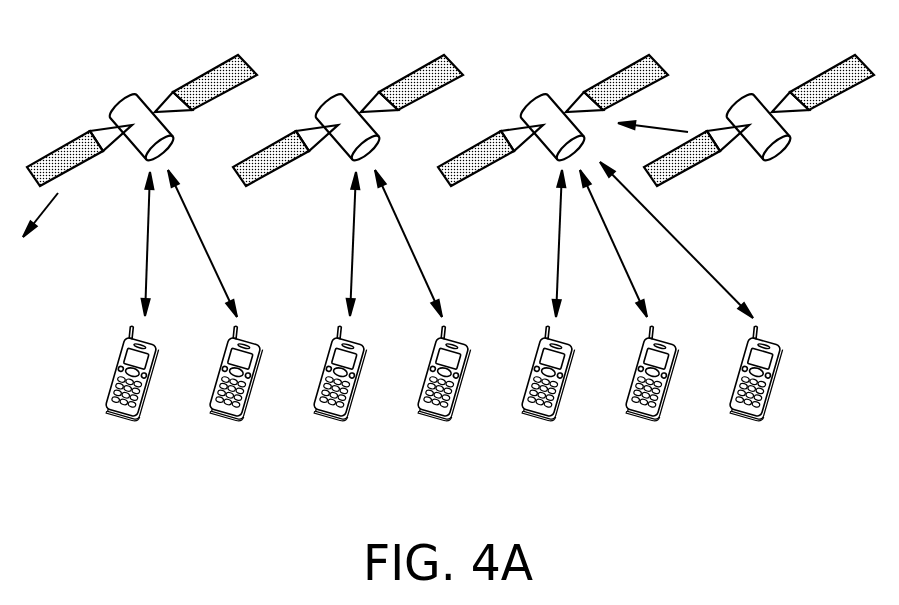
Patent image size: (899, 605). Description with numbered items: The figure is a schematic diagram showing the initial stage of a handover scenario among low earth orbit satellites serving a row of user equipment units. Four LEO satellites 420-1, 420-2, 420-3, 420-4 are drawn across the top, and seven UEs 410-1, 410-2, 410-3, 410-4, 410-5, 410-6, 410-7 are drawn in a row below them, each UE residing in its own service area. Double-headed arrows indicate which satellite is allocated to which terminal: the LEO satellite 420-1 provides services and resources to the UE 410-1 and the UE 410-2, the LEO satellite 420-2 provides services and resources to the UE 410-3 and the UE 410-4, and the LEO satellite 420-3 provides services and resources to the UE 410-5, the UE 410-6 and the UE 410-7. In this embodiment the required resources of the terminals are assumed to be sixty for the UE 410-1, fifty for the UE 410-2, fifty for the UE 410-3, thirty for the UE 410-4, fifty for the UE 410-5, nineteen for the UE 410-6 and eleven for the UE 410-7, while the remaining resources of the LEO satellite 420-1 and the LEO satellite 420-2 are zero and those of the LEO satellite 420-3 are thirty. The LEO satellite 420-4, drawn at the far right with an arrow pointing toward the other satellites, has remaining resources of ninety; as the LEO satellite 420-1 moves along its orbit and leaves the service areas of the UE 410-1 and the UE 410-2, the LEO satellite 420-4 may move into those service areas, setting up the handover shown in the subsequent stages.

The LEO satellite 420-1 is at (133, 95).
The LEO satellite 420-2 is at (339, 95).
The LEO satellite 420-3 is at (544, 95).
The LEO satellite 420-4 is at (750, 95).
The UE 410-1 is at (120, 418).
The UE 410-2 is at (224, 418).
The UE 410-3 is at (328, 418).
The UE 410-4 is at (432, 418).
The UE 410-5 is at (536, 418).
The UE 410-6 is at (640, 418).
The UE 410-7 is at (744, 418).